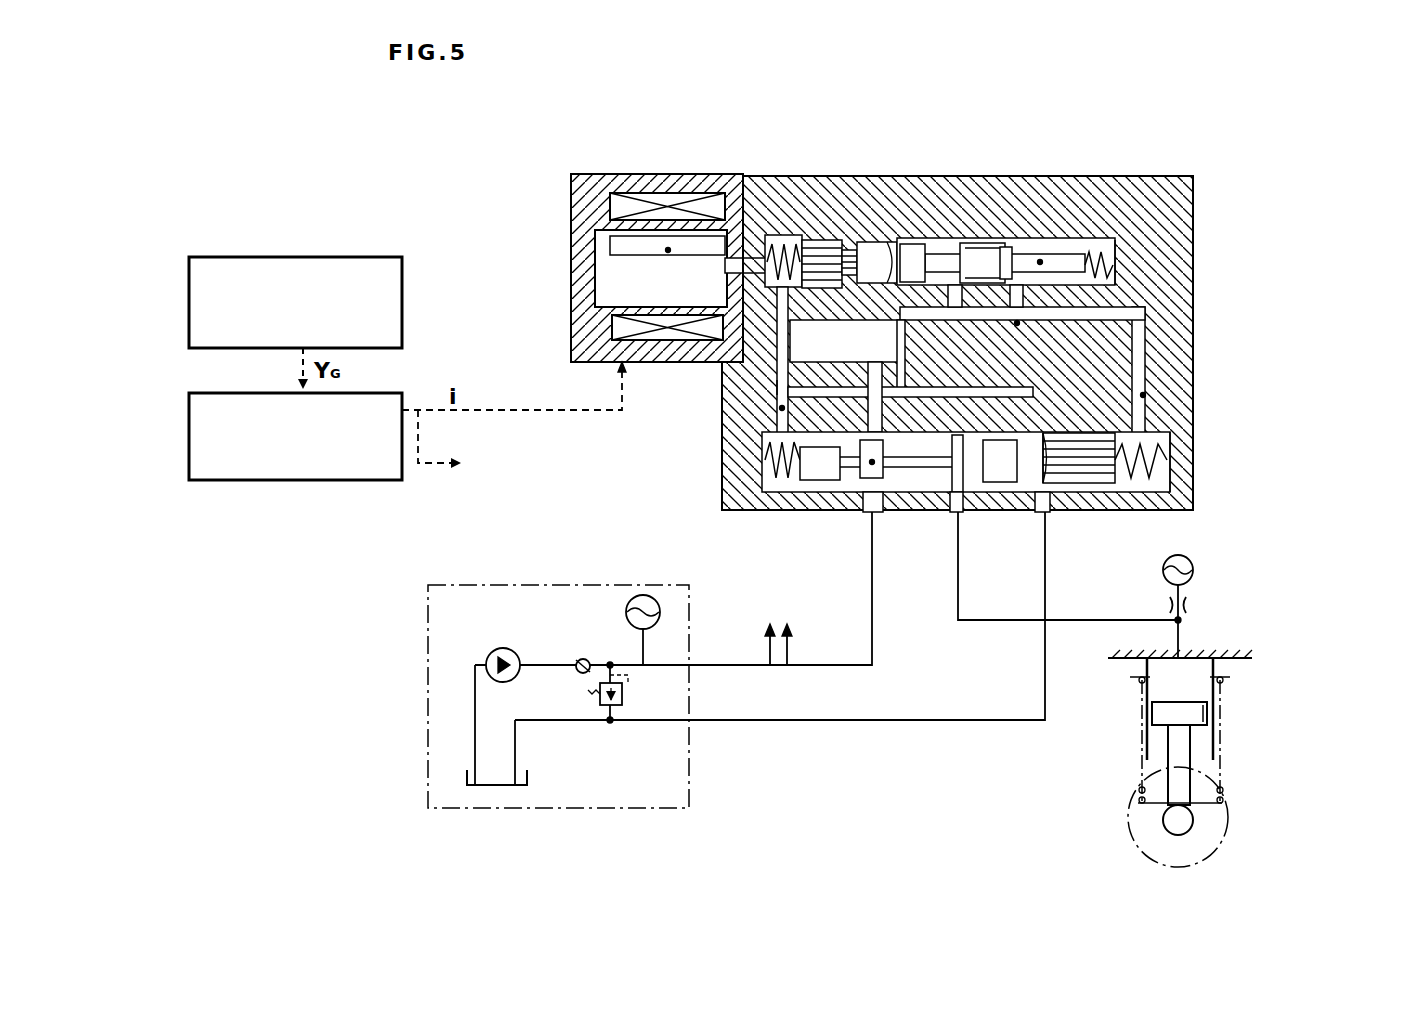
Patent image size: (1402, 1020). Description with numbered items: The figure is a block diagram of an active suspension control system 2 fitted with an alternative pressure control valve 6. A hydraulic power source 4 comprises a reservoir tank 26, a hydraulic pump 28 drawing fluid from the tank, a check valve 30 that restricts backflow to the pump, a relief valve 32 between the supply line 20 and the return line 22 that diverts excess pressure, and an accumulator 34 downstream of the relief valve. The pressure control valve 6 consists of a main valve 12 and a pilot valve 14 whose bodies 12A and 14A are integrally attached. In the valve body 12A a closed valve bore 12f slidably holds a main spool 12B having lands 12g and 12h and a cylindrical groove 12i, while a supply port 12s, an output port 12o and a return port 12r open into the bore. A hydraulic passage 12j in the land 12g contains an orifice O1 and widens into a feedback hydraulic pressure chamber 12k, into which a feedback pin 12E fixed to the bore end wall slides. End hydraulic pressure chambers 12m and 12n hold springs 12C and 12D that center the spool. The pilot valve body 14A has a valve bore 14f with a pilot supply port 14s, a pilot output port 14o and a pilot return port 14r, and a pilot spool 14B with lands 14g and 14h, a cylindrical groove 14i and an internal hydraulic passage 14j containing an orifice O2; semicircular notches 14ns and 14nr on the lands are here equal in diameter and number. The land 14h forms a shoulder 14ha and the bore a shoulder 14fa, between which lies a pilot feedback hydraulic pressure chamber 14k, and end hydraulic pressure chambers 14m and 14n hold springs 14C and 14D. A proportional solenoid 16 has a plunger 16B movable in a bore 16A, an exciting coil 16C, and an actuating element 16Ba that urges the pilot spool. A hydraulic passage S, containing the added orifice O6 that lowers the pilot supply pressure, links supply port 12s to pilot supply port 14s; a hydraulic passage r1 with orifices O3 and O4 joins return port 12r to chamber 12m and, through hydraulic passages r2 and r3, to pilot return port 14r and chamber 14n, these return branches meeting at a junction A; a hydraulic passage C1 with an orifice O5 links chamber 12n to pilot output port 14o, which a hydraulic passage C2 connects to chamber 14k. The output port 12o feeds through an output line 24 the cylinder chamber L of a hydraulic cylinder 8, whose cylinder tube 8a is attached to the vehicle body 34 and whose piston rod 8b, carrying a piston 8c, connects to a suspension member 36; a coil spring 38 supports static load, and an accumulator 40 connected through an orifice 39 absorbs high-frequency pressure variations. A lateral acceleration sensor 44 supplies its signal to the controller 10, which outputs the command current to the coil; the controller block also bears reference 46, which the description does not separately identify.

The active suspension control system 2 is at (392, 192).
The hydraulic power source 4 is at (428, 668).
The pressure control valve 6 is at (638, 425).
The hydraulic cylinder 8 is at (1125, 760).
The cylinder tube 8a is at (1140, 700).
The piston rod 8b is at (1180, 756).
The piston 8c is at (1210, 720).
The controller 10 is at (388, 382).
The main valve 12 is at (708, 505).
The valve body 12A is at (1195, 423).
The main spool 12B is at (1088, 470).
The spring 12C is at (800, 470).
The spring 12D is at (1168, 472).
The feedback pin 12E is at (812, 478).
The valve bore 12f is at (960, 432).
The land 12g is at (835, 470).
The land 12h is at (1080, 460).
The cylindrical groove 12i is at (998, 512).
The hydraulic passage 12j is at (922, 475).
The feedback hydraulic pressure chamber 12k is at (856, 470).
The end hydraulic pressure chamber 12m is at (768, 452).
The end hydraulic pressure chamber 12n is at (1195, 455).
The output port 12o is at (950, 512).
The return port 12r is at (1052, 498).
The supply port 12s is at (866, 512).
The pilot valve 14 is at (1210, 192).
The pilot valve body 14A is at (752, 176).
The pilot spool 14B is at (834, 240).
The spring 14C is at (1197, 232).
The spring 14D is at (796, 234).
The valve bore 14f is at (990, 244).
The shoulder 14fa is at (828, 296).
The land 14g is at (1110, 252).
The land 14h is at (870, 242).
The shoulder 14ha is at (849, 250).
The cylindrical groove 14i is at (920, 244).
The internal hydraulic passage 14j is at (965, 258).
The pilot feedback hydraulic pressure chamber 14k is at (742, 360).
The end hydraulic pressure chamber 14m is at (1118, 272).
The end hydraulic pressure chamber 14n is at (780, 234).
The semicircular notches 14nr is at (938, 254).
The semicircular notches 14ns is at (1008, 260).
The pilot output port 14o is at (925, 432).
The pilot return port 14r is at (915, 238).
The pilot supply port 14s is at (1014, 283).
The proportional solenoid 16 is at (565, 262).
The bore 16A is at (600, 240).
The plunger 16B is at (622, 290).
The actuating element 16Ba is at (725, 268).
The exciting coil 16C is at (617, 190).
The supply line 20 is at (828, 665).
The return line 22 is at (787, 722).
The output line 24 is at (1092, 620).
The reservoir tank 26 is at (530, 778).
The hydraulic pump 28 is at (498, 650).
The check valve 30 is at (578, 660).
The relief valve 32 is at (625, 697).
The accumulator 34 is at (626, 617).
The suspension member 36 is at (1195, 825).
The coil spring 38 is at (1222, 690).
The orifice 39 is at (1190, 606).
The accumulator 40 is at (1194, 568).
The lateral acceleration sensor 44 is at (402, 340).
The controller 46 is at (324, 480).
The junction A is at (882, 398).
The hydraulic passage C1 is at (1192, 316).
The hydraulic passage C2 is at (880, 300).
The cylinder chamber L is at (1160, 668).
The orifice O1 is at (878, 520).
The orifice O2 is at (1040, 262).
The orifice O3 is at (958, 384).
The orifice O4 is at (780, 410).
The orifice O5 is at (1145, 395).
The orifice O6 is at (1050, 337).
The hydraulic passage S is at (1017, 330).
The hydraulic passage r1 is at (935, 396).
The hydraulic passage r2 is at (955, 300).
The hydraulic passage r3 is at (770, 382).